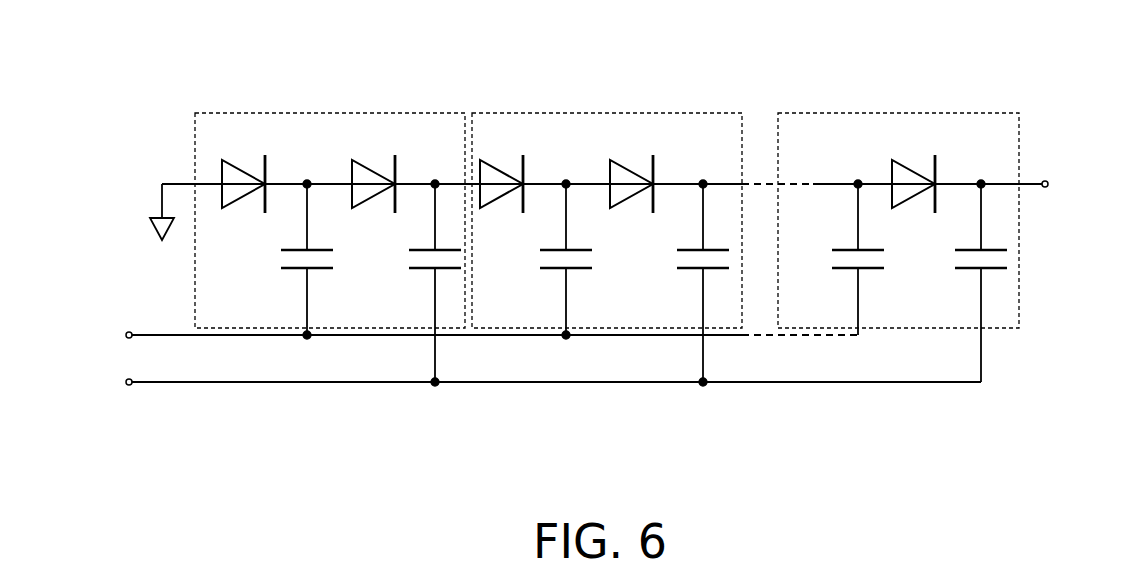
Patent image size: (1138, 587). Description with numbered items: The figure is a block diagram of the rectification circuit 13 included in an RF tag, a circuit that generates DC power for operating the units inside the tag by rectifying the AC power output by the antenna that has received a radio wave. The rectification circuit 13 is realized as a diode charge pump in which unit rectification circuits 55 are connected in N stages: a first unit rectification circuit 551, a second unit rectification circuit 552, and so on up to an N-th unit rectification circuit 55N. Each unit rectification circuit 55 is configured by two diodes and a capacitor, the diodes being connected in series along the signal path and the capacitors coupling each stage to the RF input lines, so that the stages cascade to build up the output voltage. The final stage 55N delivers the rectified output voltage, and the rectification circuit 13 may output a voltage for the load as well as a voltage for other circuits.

The rectification circuit 13 is at (992, 86).
The unit rectification circuit 55 is at (607, 213).
The first unit rectification circuit 551 is at (330, 113).
The second unit rectification circuit 552 is at (607, 113).
The N-th unit rectification circuit 55N is at (878, 113).